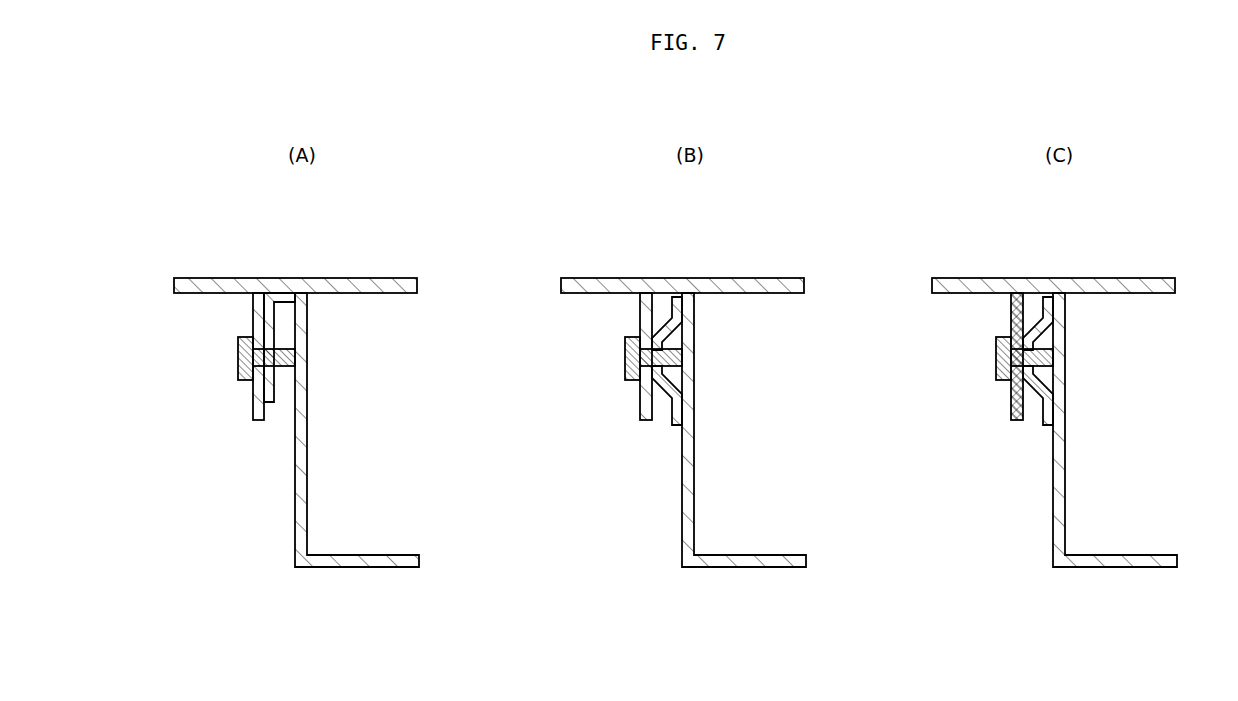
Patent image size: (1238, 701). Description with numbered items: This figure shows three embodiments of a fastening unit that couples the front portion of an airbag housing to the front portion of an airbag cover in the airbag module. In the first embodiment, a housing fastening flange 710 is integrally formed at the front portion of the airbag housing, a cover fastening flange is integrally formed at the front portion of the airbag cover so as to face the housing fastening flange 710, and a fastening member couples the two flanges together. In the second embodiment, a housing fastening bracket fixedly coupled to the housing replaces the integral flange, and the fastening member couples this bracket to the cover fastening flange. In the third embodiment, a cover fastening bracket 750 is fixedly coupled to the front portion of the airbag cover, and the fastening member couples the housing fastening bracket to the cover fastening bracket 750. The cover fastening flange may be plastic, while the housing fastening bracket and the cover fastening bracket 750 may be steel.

The housing fastening flange 710 is at (272, 389).
The cover fastening bracket 750 is at (1012, 318).